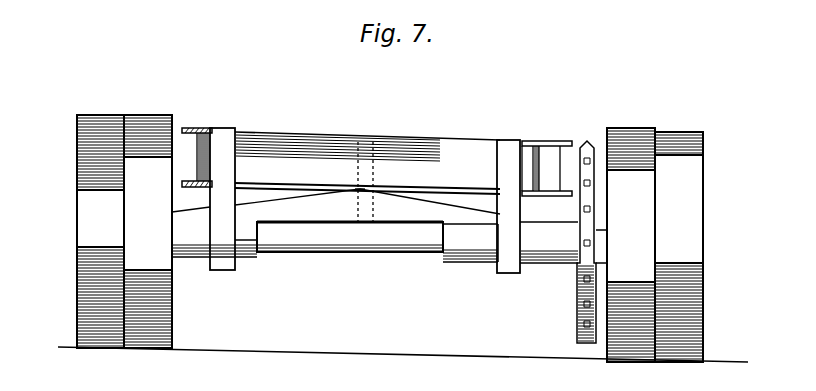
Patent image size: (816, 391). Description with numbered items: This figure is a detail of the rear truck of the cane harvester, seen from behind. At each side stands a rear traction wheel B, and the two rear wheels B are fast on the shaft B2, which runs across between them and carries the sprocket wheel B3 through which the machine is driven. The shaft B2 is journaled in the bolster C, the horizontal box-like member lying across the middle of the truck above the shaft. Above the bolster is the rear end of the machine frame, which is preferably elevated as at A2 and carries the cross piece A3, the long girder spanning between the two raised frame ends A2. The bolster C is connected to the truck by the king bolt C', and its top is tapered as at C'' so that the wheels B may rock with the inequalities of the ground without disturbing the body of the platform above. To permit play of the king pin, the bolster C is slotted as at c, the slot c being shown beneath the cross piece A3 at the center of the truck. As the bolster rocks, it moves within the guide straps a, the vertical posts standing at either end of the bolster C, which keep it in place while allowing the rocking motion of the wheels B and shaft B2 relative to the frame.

The rear traction wheel B is at (88, 217).
The shaft B2 is at (394, 256).
The sprocket wheel B3 is at (575, 330).
The elevated rear end of frame A2 is at (210, 129).
The cross piece A3 is at (441, 142).
The guide strap a is at (223, 262).
The bolster C is at (350, 250).
The king bolt C' is at (382, 174).
The tapered top of bolster C'' is at (367, 208).
The slot c is at (382, 224).